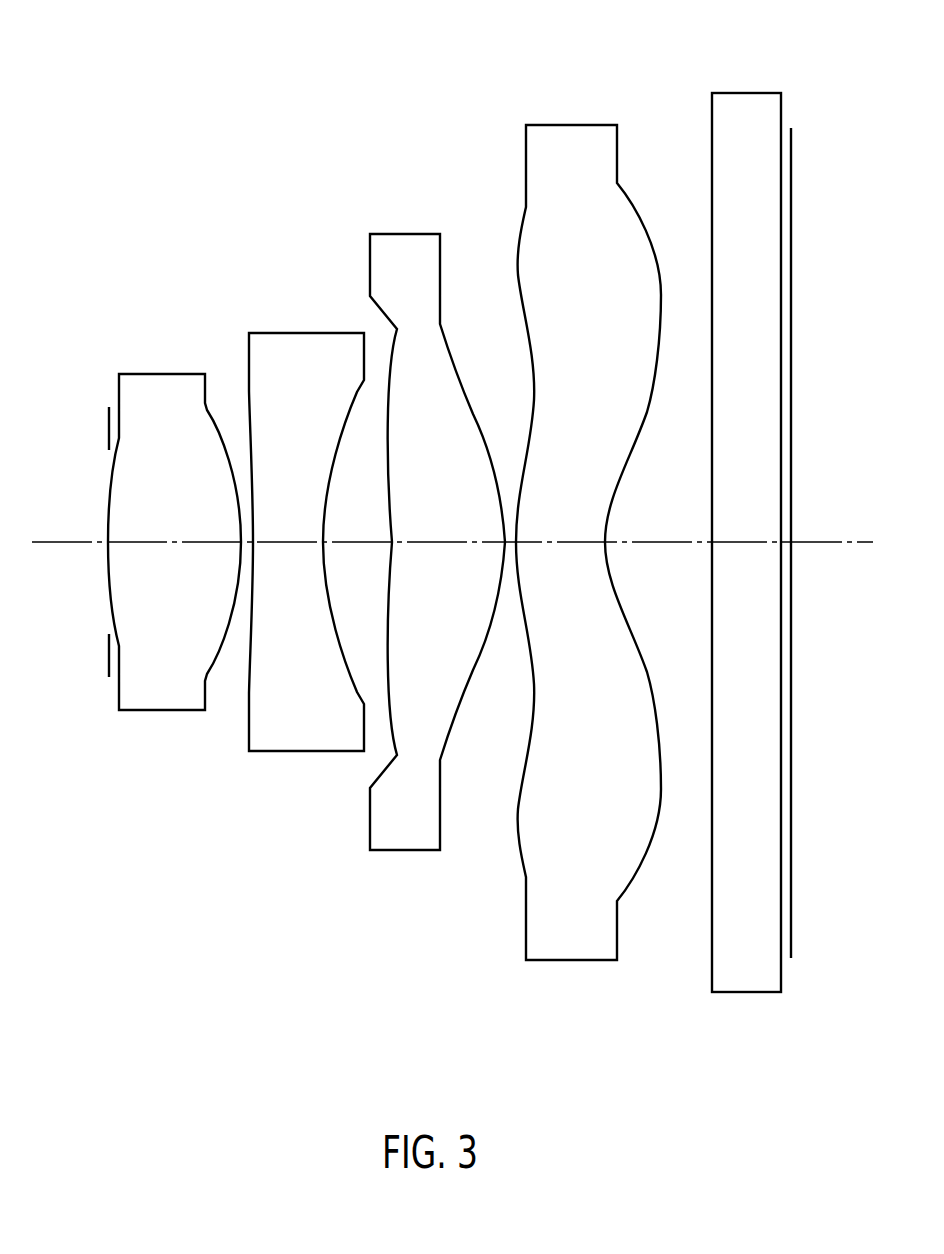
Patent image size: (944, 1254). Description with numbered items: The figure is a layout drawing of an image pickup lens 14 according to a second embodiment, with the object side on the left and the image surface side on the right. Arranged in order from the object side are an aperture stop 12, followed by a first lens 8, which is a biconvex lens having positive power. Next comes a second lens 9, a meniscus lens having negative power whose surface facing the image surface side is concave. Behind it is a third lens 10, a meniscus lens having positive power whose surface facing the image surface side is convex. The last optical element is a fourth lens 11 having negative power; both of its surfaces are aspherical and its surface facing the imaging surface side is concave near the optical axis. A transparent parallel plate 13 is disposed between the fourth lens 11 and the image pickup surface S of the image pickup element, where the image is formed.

The first lens 8 is at (157, 374).
The second lens 9 is at (303, 333).
The third lens 10 is at (400, 234).
The fourth lens 11 is at (570, 125).
The aperture stop 12 is at (108, 430).
The transparent parallel plate 13 is at (744, 93).
The image pickup lens 14 is at (317, 92).
The image pickup surface S is at (791, 190).